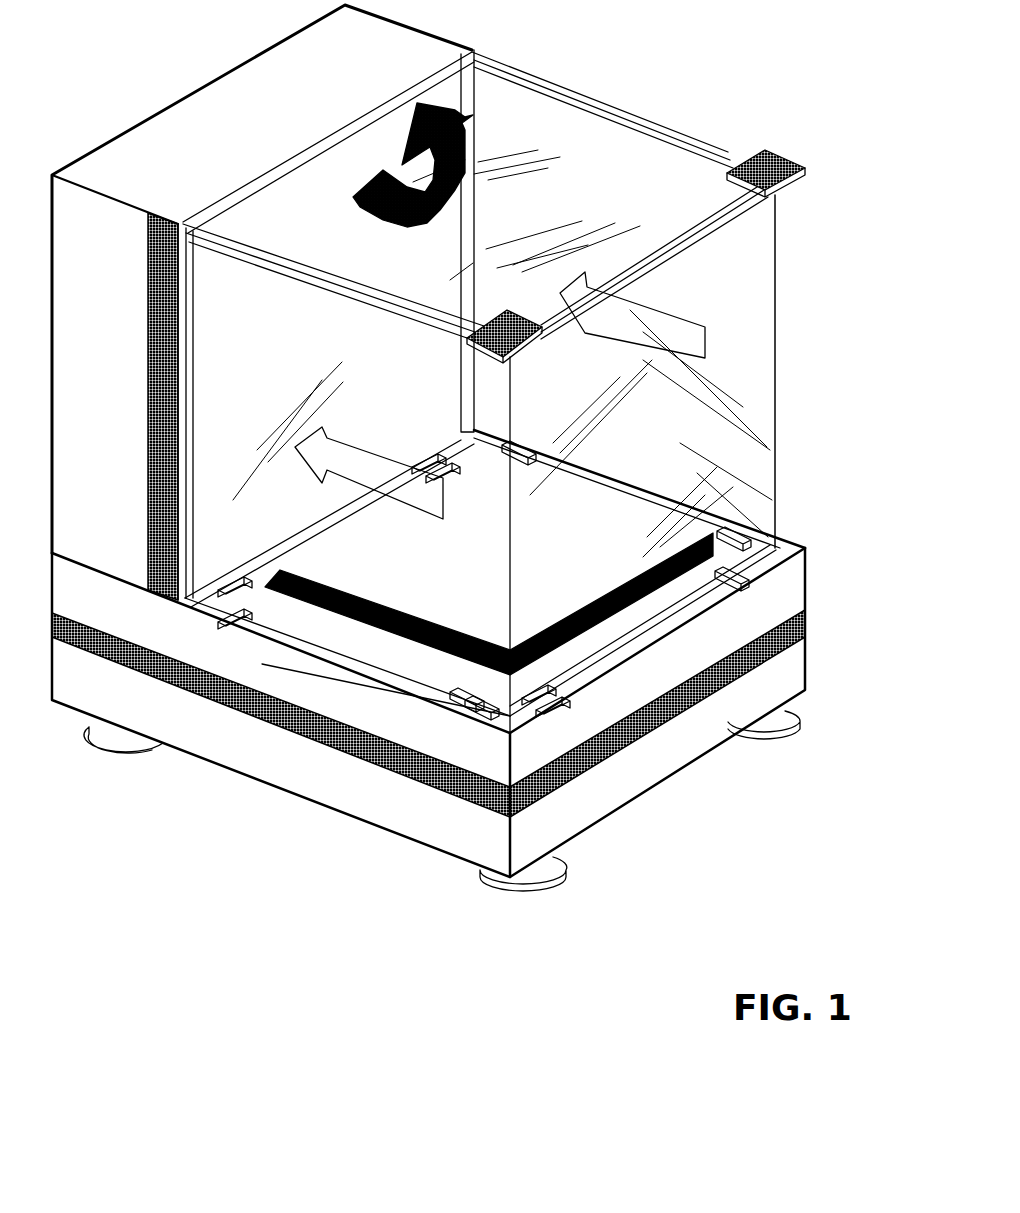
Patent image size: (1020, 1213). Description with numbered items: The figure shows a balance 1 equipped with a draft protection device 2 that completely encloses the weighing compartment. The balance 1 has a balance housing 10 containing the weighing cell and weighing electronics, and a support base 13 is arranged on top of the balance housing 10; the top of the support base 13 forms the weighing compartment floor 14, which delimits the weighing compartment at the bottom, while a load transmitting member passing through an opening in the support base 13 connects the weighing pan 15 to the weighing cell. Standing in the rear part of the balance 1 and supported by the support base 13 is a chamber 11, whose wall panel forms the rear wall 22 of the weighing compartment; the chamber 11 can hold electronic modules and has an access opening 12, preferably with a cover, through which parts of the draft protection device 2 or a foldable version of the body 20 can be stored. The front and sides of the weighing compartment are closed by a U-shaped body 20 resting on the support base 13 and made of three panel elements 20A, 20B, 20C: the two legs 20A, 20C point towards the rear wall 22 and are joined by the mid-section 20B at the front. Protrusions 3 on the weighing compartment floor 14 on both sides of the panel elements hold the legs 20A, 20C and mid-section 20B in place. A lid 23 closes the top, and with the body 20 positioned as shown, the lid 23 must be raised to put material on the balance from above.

The balance 1 is at (310, 860).
The draft protection device 2 is at (623, 85).
The protrusions 3 is at (746, 552).
The balance housing 10 is at (318, 782).
The chamber 11 is at (173, 163).
The access opening 12 is at (157, 390).
The support base 13 is at (268, 667).
The weighing compartment floor 14 is at (373, 670).
The weighing pan 15 is at (497, 638).
The U-shaped body 20 is at (778, 415).
The panel element (leg of U-profile) 20A is at (730, 247).
The panel element (mid-section of U-profile) 20B is at (722, 353).
The panel element (leg of U-profile) 20C is at (333, 727).
The rear wall 22 is at (347, 182).
The lid 23 is at (502, 115).